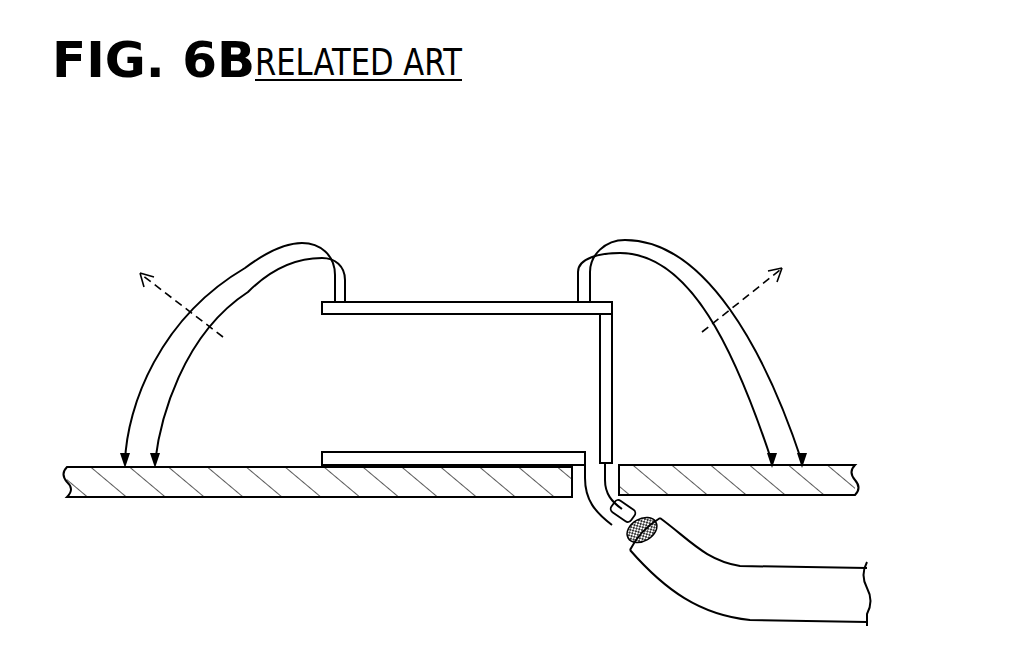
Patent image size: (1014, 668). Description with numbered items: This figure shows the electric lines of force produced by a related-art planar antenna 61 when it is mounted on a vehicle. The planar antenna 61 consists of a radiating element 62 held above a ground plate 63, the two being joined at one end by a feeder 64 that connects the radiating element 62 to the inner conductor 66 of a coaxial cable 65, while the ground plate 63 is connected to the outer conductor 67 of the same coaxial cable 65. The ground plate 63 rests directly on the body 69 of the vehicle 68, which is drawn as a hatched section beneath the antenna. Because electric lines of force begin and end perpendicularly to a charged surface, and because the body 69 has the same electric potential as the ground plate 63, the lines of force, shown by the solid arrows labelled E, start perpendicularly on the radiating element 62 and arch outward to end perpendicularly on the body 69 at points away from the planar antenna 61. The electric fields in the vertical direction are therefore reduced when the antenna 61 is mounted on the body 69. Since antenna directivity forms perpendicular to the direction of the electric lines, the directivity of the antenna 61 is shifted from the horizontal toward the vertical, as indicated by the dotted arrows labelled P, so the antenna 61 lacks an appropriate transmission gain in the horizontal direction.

The planar antenna 61 is at (376, 258).
The radiating element 62 is at (445, 300).
The ground plate 63 is at (430, 450).
The feeder 64 is at (612, 387).
The coaxial cable 65 is at (665, 590).
The inner conductor 66 is at (620, 476).
The outer conductor 67 is at (588, 517).
The vehicle 68 is at (64, 447).
The body 69 is at (103, 466).